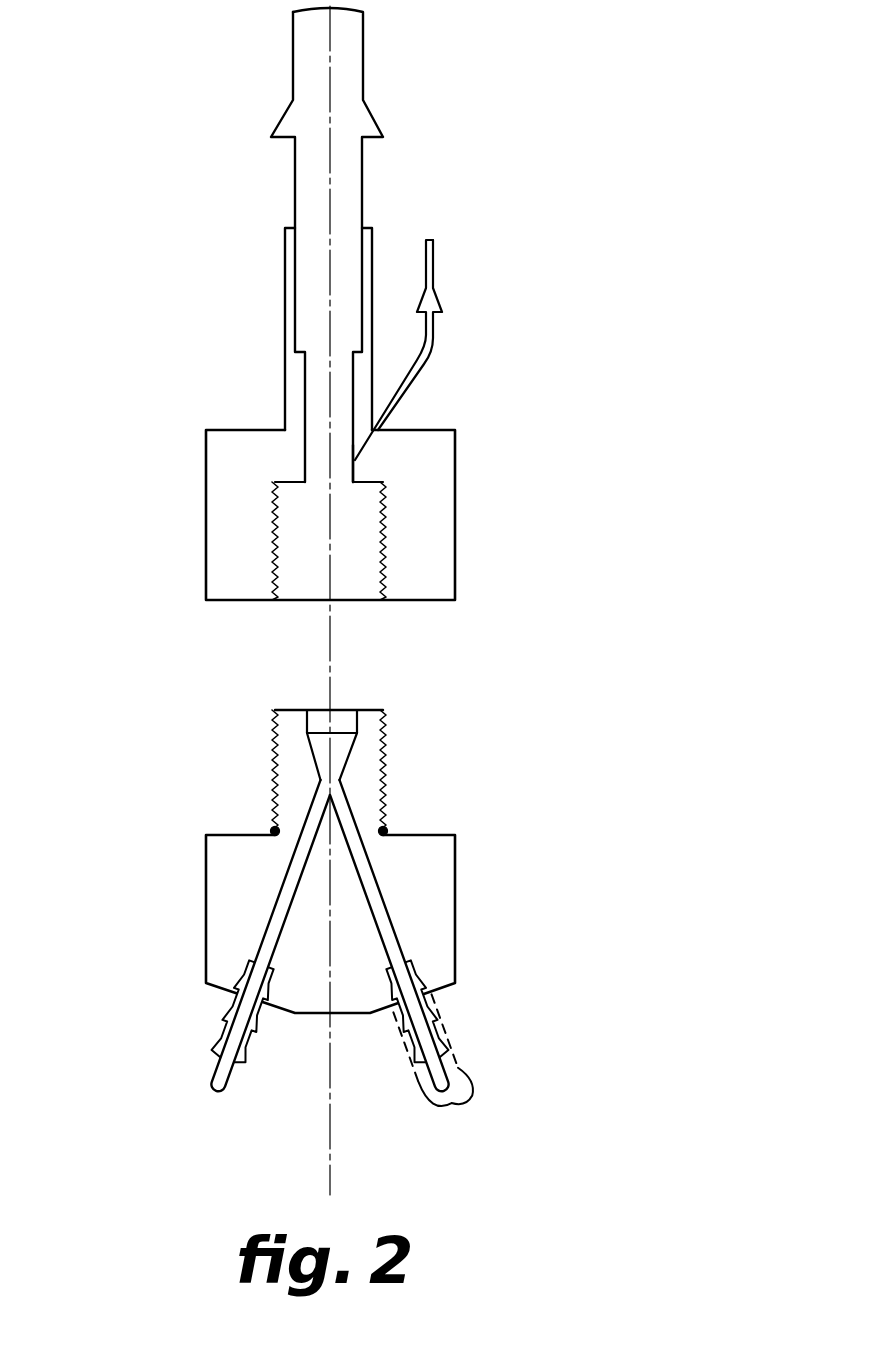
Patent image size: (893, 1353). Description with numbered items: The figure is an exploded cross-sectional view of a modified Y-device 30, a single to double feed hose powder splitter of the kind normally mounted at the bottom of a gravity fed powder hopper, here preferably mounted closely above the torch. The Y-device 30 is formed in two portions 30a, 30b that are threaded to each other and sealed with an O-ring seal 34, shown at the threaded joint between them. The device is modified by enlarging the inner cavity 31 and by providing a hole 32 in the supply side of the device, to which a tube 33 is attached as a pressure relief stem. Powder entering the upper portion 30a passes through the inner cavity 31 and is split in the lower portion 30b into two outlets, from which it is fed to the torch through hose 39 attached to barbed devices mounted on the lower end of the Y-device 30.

The Y-device 30 is at (386, 243).
The upper portion 30a is at (284, 372).
The lower portion 30b is at (206, 913).
The inner cavity 31 is at (318, 470).
The hole 32 is at (353, 463).
The tube 33 is at (413, 383).
The O-ring seal 34 is at (270, 829).
The hose 39 is at (450, 1027).